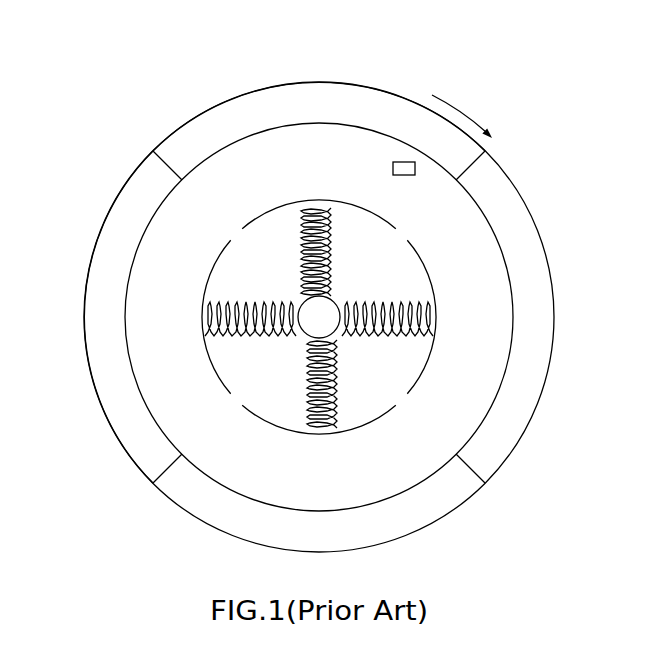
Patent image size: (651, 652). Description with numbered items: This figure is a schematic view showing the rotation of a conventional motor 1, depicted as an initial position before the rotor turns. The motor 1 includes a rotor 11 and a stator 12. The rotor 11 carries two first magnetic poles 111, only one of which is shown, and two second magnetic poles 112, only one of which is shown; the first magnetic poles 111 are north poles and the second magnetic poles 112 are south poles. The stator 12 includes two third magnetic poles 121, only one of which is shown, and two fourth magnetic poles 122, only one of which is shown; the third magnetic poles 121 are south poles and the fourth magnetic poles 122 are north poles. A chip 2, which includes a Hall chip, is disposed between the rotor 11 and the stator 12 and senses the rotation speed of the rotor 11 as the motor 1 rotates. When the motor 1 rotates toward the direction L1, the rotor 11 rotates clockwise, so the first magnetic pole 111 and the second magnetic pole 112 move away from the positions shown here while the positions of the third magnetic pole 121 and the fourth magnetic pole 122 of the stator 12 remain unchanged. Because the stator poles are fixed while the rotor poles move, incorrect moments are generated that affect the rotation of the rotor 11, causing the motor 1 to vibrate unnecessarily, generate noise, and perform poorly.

The motor 1 is at (143, 85).
The rotor 11 is at (525, 184).
The first magnetic pole 111 is at (272, 100).
The second magnetic pole 112 is at (92, 281).
The stator 12 is at (468, 269).
The third magnetic pole 121 is at (273, 207).
The fourth magnetic pole 122 is at (432, 355).
The chip 2 is at (403, 162).
The direction L1 is at (462, 116).